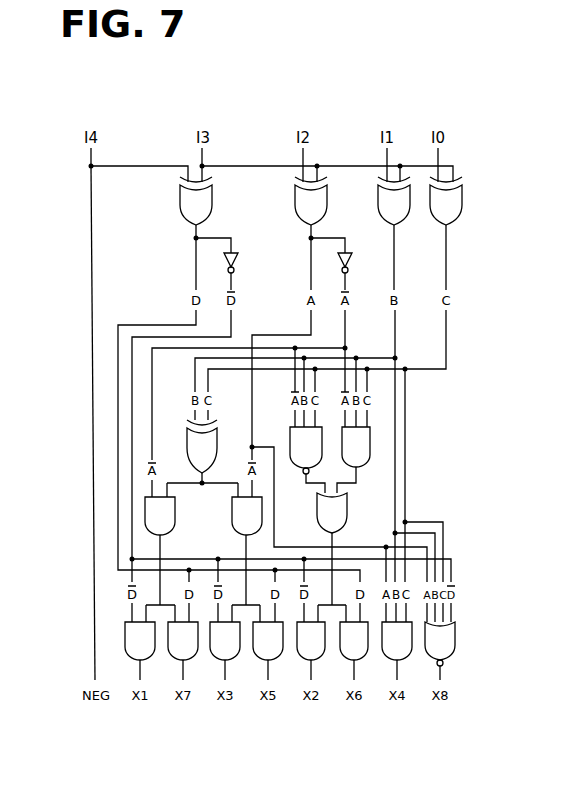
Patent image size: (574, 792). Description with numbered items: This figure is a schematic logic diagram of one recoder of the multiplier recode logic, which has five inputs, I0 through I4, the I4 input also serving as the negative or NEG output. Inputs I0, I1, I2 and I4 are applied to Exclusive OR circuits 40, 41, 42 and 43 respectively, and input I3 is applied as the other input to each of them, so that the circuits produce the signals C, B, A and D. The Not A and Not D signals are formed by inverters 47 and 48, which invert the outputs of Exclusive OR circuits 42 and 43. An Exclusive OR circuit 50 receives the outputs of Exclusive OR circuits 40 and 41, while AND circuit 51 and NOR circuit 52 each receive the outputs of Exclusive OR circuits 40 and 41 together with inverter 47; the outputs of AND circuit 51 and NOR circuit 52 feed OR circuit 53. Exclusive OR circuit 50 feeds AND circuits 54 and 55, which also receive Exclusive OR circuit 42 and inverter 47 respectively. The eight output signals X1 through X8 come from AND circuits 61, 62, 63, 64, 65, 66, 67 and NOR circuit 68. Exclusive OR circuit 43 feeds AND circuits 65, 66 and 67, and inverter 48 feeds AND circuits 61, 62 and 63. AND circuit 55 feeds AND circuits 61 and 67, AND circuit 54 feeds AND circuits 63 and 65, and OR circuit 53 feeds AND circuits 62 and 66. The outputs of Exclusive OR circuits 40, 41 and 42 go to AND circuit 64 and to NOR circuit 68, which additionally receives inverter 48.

The Exclusive OR circuit 40 is at (450, 206).
The Exclusive OR circuit 41 is at (392, 206).
The Exclusive OR circuit 42 is at (305, 206).
The Exclusive OR circuit 43 is at (190, 206).
The inverter 47 is at (347, 265).
The inverter 48 is at (233, 265).
The Exclusive OR circuit 50 is at (198, 447).
The AND circuit 51 is at (360, 452).
The NOR circuit 52 is at (298, 447).
The OR circuit 53 is at (328, 513).
The AND circuit 54 is at (243, 517).
The AND circuit 55 is at (158, 521).
The AND circuit 61 is at (144, 648).
The AND circuit 62 is at (315, 648).
The AND circuit 63 is at (229, 648).
The AND circuit 64 is at (401, 648).
The AND circuit 65 is at (272, 648).
The AND circuit 66 is at (358, 648).
The AND circuit 67 is at (187, 648).
The NOR circuit 68 is at (444, 650).